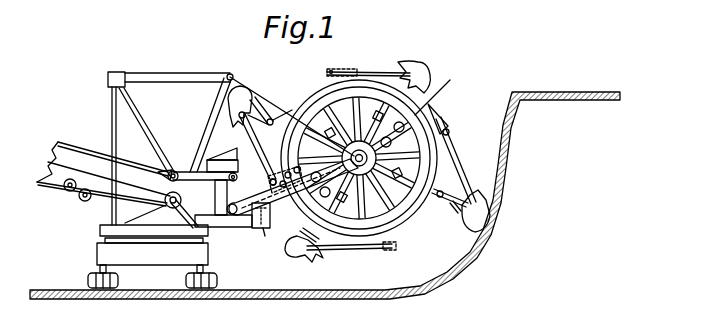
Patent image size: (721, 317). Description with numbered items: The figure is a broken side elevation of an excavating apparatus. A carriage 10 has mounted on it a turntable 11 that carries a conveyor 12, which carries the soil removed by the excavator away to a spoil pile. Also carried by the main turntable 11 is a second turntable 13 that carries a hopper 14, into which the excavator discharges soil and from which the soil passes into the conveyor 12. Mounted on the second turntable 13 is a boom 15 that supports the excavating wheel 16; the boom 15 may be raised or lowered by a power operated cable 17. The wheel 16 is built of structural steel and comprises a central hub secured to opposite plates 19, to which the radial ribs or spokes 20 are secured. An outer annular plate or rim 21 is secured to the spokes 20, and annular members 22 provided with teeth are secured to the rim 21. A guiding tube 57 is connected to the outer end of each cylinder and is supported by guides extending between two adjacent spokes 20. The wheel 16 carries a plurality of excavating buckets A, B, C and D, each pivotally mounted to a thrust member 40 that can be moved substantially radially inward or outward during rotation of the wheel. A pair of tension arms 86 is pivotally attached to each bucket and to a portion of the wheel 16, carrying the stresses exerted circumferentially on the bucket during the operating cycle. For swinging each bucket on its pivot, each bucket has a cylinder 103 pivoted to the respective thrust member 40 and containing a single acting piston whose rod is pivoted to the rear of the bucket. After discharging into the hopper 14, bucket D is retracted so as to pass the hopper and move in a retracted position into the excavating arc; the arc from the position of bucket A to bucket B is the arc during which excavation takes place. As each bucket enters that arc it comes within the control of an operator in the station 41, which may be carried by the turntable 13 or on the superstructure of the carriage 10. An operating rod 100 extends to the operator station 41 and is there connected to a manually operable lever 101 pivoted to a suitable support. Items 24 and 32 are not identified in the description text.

The carriage 10 is at (97, 253).
The turntable 11 is at (221, 247).
The conveyor 12 is at (62, 150).
The second turntable 13 is at (207, 217).
The hopper 14 is at (218, 158).
The boom 15 is at (242, 202).
The excavating wheel 16 is at (440, 92).
The power operated cable 17 is at (260, 96).
The plates 19 is at (374, 158).
The radial ribs or spokes 20 is at (413, 141).
The outer annular plate or rim 21 is at (403, 222).
The annular members 22 is at (420, 218).
The wheel supporting arm 24 is at (298, 177).
The strut 32 is at (259, 161).
The thrust member 40 is at (265, 106).
The operator station 41 is at (258, 230).
The guiding tube 57 is at (377, 111).
The tension arms 86 is at (368, 72).
The operating rod 100 is at (290, 216).
The manually operable lever 101 is at (263, 236).
The cylinder 103 is at (451, 207).
The excavating bucket A is at (303, 260).
The excavating bucket B is at (478, 218).
The excavating bucket C is at (422, 63).
The excavating bucket D is at (240, 87).